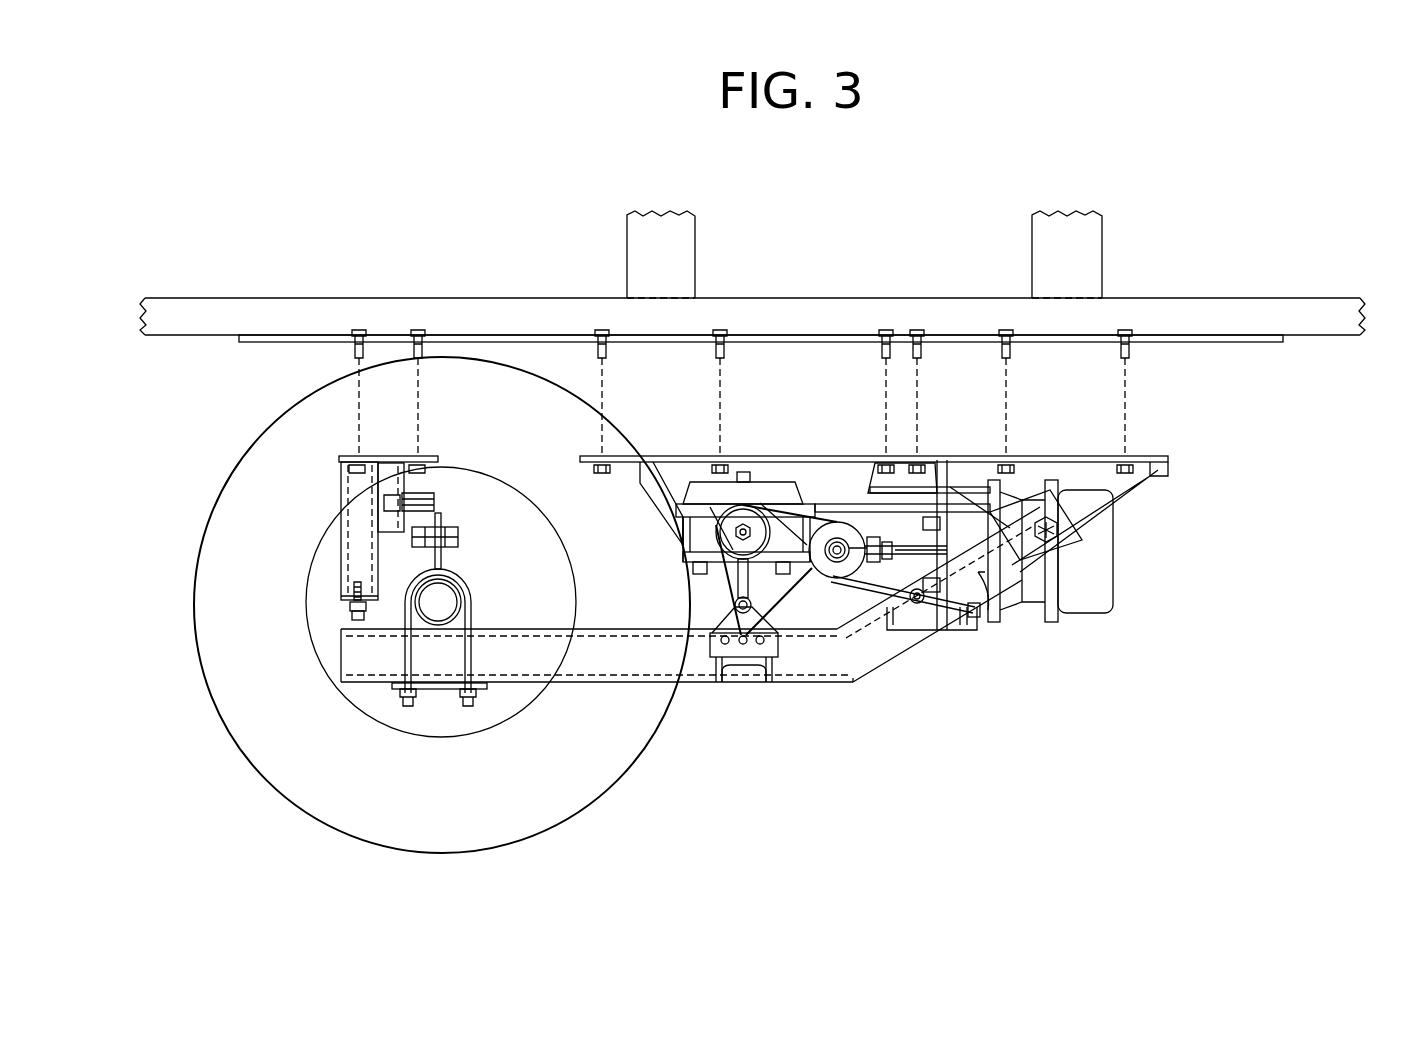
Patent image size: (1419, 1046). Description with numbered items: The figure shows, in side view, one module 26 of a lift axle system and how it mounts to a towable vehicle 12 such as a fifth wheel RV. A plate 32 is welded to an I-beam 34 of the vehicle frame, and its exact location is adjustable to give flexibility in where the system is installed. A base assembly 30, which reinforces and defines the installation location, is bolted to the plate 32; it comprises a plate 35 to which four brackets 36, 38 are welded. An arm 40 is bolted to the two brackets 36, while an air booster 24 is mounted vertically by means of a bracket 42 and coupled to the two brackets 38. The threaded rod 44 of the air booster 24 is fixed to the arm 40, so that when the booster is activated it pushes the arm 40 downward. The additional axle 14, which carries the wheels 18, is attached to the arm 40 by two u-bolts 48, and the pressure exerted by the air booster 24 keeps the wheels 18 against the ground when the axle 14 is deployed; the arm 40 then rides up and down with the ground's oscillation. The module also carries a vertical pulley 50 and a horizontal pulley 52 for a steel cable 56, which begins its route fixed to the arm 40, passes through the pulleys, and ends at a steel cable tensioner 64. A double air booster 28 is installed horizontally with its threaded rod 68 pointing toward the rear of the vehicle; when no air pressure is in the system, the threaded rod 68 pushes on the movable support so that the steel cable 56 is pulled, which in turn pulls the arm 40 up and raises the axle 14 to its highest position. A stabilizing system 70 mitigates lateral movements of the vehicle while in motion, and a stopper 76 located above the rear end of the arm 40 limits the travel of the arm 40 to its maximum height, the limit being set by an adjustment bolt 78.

The towable vehicle 12 is at (1222, 300).
The axle 14 is at (452, 607).
The wheels 18 is at (636, 722).
The air booster 24 is at (783, 485).
The module 26 is at (936, 673).
The double air booster 28 is at (1097, 585).
The base assembly 30 is at (1184, 457).
The plate 32 is at (1210, 344).
The I-beam 34 is at (285, 315).
The plate 35 is at (1168, 470).
The brackets 36 is at (1120, 510).
The brackets 38 is at (650, 487).
The arm 40 is at (845, 665).
The bracket 42 is at (683, 545).
The threaded rod 44 is at (750, 585).
The u-bolts 48 is at (475, 598).
The pulley 50 is at (745, 504).
The pulley 52 is at (950, 482).
The steel cable 56 is at (738, 603).
The steel cable tensioner 64 is at (925, 632).
The threaded rod 68 is at (903, 555).
The stabilizing system 70 is at (450, 507).
The stopper 76 is at (360, 545).
The adjustment bolt 78 is at (352, 618).